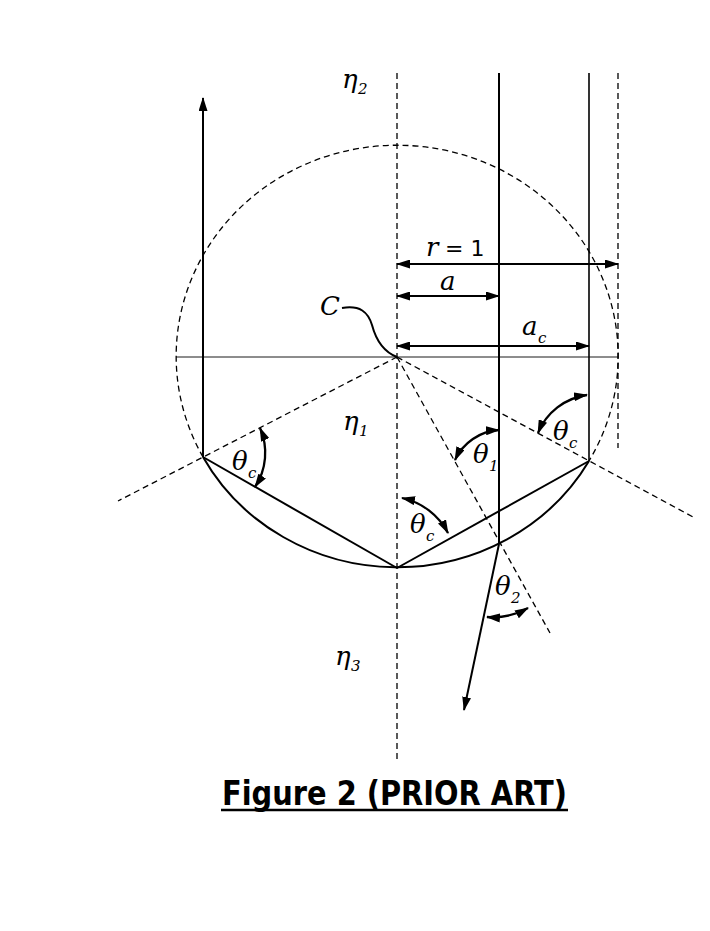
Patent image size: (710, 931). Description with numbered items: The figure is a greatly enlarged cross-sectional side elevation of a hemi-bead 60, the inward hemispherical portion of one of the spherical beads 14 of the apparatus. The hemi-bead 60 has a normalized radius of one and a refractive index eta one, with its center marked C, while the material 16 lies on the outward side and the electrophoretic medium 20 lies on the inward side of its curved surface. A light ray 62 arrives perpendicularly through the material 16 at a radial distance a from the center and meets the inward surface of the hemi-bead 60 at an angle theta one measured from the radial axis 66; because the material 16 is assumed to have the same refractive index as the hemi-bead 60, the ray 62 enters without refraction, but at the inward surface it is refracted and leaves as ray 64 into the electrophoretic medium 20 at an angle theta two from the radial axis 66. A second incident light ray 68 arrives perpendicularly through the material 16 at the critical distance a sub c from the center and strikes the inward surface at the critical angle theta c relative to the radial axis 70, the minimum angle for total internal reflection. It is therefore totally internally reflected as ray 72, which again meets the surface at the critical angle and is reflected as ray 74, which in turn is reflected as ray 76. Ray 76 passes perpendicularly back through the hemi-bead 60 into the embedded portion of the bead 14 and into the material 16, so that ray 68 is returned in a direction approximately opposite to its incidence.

The spherical bead 14 is at (180, 310).
The material 16 is at (303, 99).
The electrophoretic medium 20 is at (311, 692).
The hemi-bead 60 is at (293, 543).
The light ray 62 is at (499, 127).
The ray 64 is at (478, 655).
The radial axis 66 is at (527, 585).
The incident light ray 68 is at (589, 83).
The radial axis 70 is at (665, 505).
The ray 72 is at (538, 495).
The ray 74 is at (301, 513).
The ray 76 is at (205, 295).